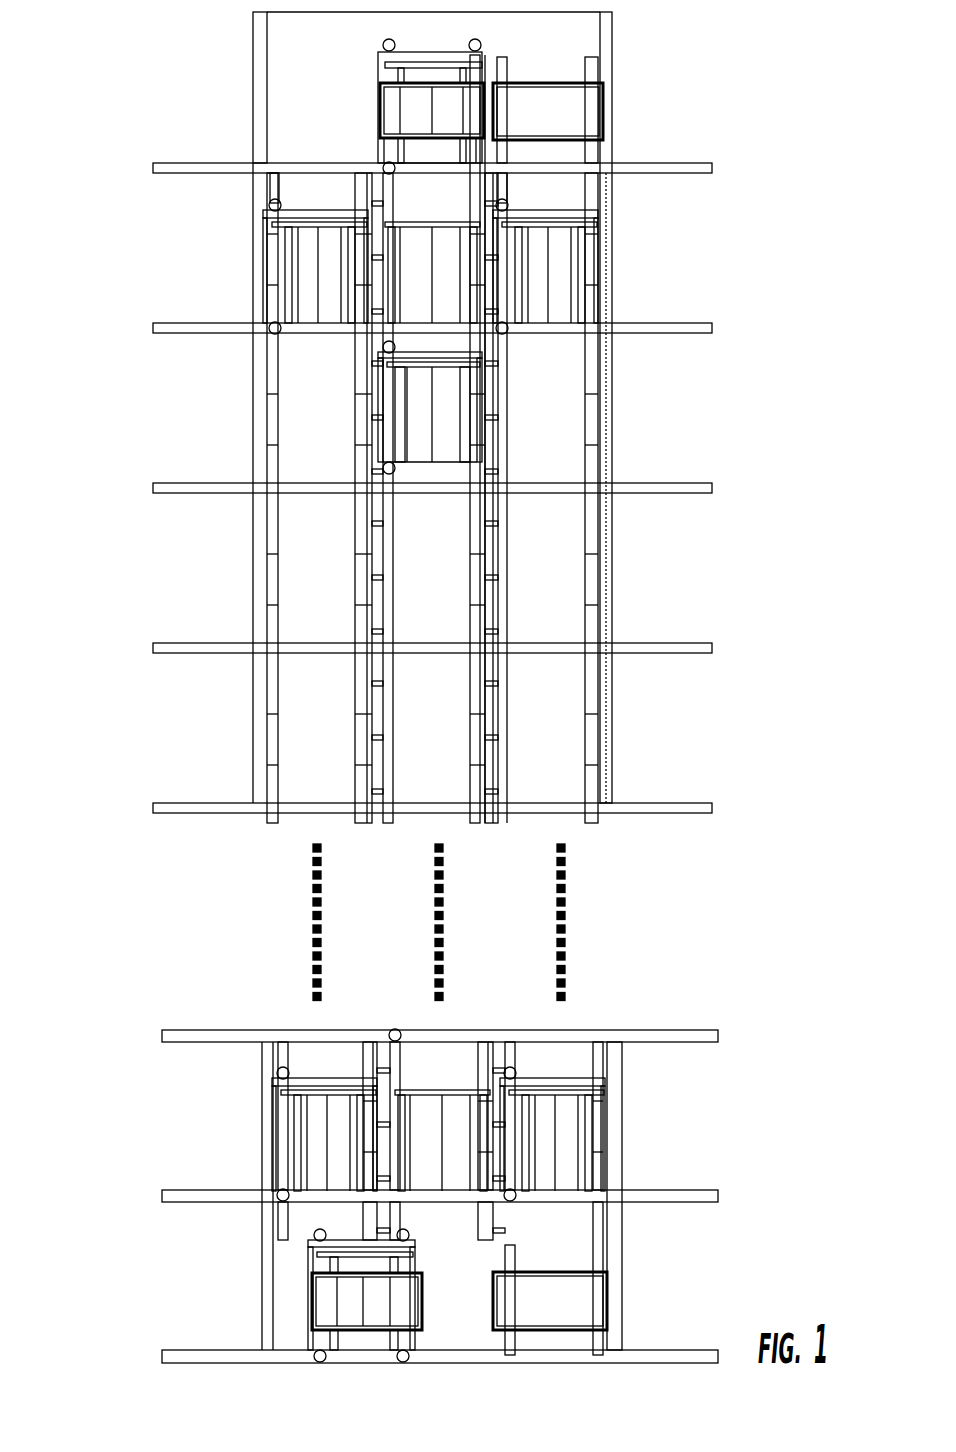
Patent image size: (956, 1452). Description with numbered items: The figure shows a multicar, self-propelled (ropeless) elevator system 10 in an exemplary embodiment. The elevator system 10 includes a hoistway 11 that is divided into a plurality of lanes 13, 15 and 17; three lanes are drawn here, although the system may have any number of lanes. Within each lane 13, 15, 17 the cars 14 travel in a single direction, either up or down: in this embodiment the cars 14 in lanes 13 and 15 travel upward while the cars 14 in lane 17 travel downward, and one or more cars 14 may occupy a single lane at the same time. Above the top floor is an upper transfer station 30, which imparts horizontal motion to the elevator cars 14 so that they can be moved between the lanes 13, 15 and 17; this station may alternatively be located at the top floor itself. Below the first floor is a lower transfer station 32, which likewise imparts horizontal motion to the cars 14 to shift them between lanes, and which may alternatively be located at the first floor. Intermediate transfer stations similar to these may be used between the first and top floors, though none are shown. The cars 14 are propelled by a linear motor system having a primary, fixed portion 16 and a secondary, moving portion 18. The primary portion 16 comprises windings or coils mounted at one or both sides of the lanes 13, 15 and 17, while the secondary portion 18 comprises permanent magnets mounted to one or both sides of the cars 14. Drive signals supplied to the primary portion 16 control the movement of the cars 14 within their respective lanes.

The elevator system 10 is at (110, 50).
The hoistway 11 is at (612, 25).
The upper transfer station 30 is at (312, 128).
The car 14 is at (313, 273).
The secondary, moving portion 18 is at (590, 296).
The lane 17 is at (305, 552).
The primary, fixed portion 16 is at (598, 590).
The lane 15 is at (432, 722).
The lane 13 is at (560, 752).
The lower transfer station 32 is at (272, 1302).